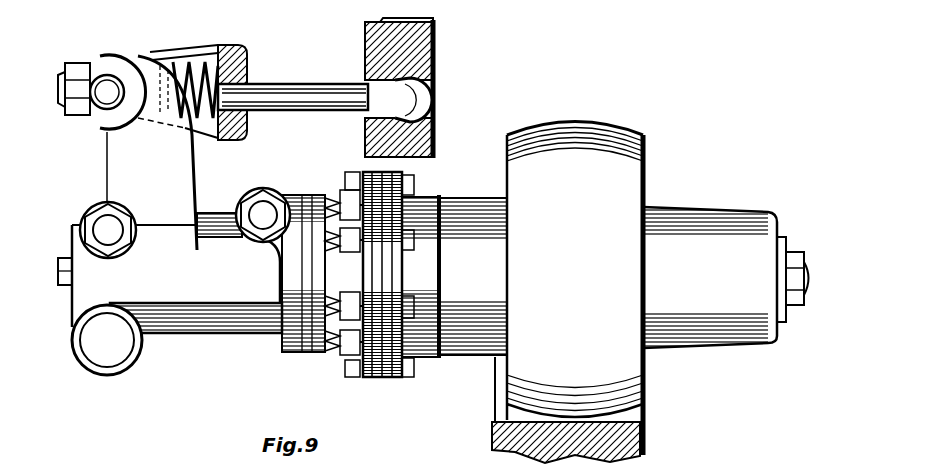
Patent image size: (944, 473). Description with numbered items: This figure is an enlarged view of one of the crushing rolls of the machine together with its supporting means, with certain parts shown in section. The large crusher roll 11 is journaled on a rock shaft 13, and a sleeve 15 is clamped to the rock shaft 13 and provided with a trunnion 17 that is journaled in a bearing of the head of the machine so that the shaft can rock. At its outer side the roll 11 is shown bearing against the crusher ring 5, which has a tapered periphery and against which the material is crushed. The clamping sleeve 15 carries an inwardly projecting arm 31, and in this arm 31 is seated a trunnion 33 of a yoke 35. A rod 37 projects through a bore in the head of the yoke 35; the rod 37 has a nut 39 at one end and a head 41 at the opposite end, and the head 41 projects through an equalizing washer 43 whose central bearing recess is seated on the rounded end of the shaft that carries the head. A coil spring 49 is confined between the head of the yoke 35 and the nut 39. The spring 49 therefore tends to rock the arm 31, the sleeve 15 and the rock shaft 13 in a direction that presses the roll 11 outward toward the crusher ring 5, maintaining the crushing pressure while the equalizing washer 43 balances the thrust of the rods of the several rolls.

The crusher ring 5 is at (622, 437).
The crusher roll 11 is at (625, 378).
The rock shaft 13 is at (338, 345).
The sleeve 15 is at (208, 340).
The trunnion 17 is at (108, 352).
The arm 31 is at (108, 167).
The trunnion 33 is at (94, 118).
The yoke 35 is at (248, 72).
The rod 37 is at (278, 118).
The nut 39 is at (78, 64).
The head 41 is at (428, 88).
The equalizing washer 43 is at (433, 55).
The coil spring 49 is at (175, 62).